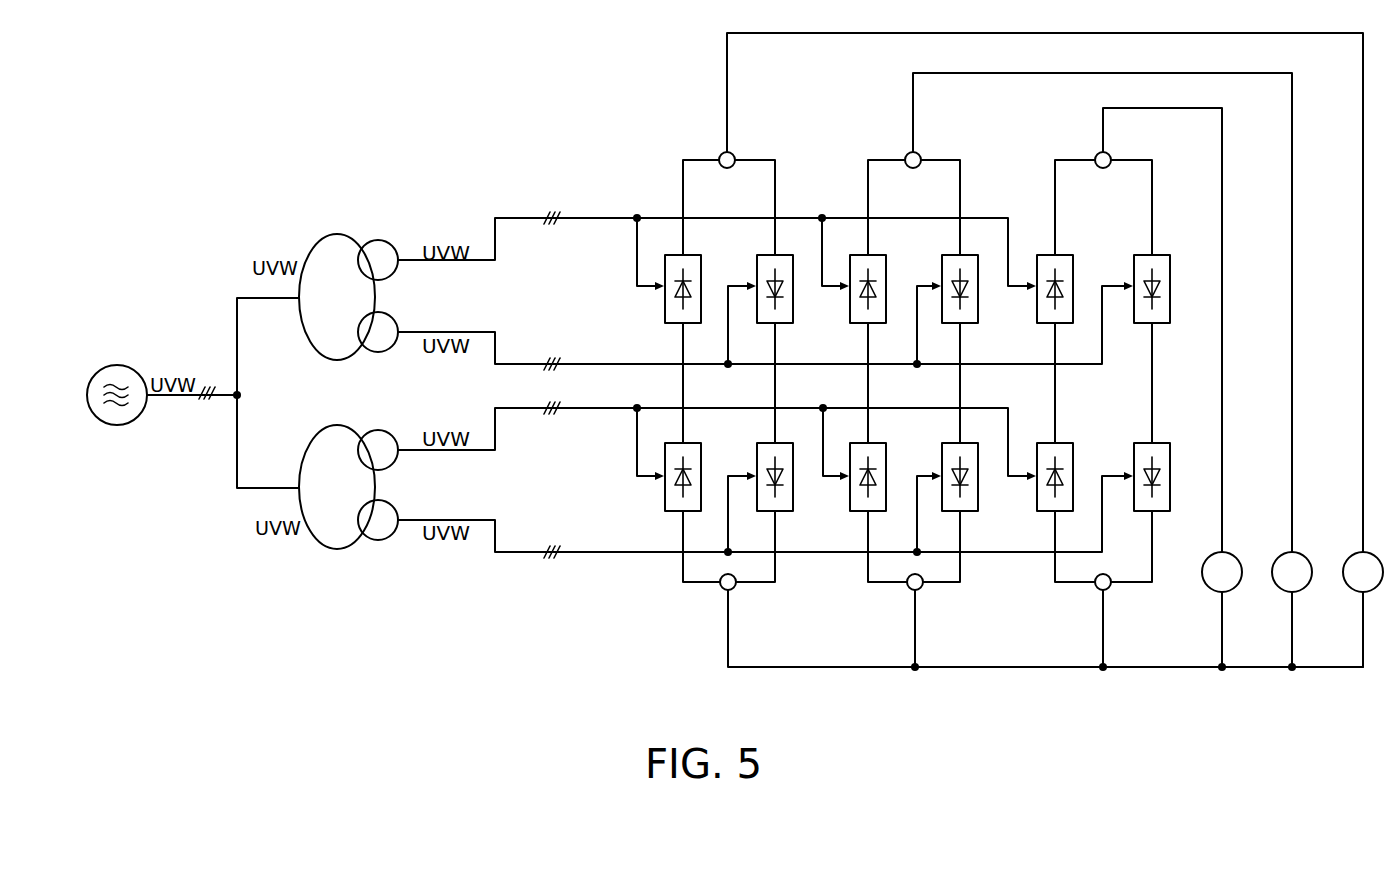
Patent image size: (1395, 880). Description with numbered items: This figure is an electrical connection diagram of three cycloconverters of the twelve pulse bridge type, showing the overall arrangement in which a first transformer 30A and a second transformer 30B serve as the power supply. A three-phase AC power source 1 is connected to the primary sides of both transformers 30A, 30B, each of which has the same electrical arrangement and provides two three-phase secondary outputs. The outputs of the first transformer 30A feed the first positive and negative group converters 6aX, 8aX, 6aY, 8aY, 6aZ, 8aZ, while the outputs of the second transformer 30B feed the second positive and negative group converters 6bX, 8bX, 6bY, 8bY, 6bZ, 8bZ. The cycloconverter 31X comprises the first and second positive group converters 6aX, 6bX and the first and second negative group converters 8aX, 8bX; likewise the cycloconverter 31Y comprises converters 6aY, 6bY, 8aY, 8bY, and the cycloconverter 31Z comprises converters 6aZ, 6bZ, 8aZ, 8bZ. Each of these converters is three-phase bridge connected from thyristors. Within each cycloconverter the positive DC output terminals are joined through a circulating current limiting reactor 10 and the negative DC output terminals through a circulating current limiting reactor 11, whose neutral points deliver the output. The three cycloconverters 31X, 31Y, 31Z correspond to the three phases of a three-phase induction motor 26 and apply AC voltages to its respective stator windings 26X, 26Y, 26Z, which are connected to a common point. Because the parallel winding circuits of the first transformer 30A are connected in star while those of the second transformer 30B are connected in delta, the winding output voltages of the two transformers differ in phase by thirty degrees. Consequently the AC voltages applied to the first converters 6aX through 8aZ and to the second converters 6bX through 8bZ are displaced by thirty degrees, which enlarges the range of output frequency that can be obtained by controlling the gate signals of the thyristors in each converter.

The three-phase AC power source 1 is at (117, 425).
The first transformer 30A is at (346, 232).
The second transformer 30B is at (337, 557).
The cycloconverter 31X is at (703, 131).
The cycloconverter 31Y is at (892, 132).
The cycloconverter 31Z is at (1082, 128).
The first positive group converter 6aX is at (697, 257).
The first negative group converter 8aX is at (793, 305).
The first positive group converter 6aY is at (880, 255).
The first negative group converter 8aY is at (978, 305).
The first positive group converter 6aZ is at (1059, 253).
The first negative group converter 8aZ is at (1170, 305).
The second positive group converter 6bX is at (695, 447).
The second negative group converter 8bX is at (793, 493).
The second positive group converter 6bY is at (882, 445).
The second negative group converter 8bY is at (978, 493).
The second positive group converter 6bZ is at (1064, 441).
The second negative group converter 8bZ is at (1170, 493).
The circulating current limiting reactor 10 is at (735, 153).
The circulating current limiting reactor 11 is at (721, 589).
The stator winding 26Z is at (1214, 592).
The stator winding 26Y is at (1284, 592).
The stator winding 26X is at (1355, 592).
The three-phase induction motor 26 is at (1238, 672).